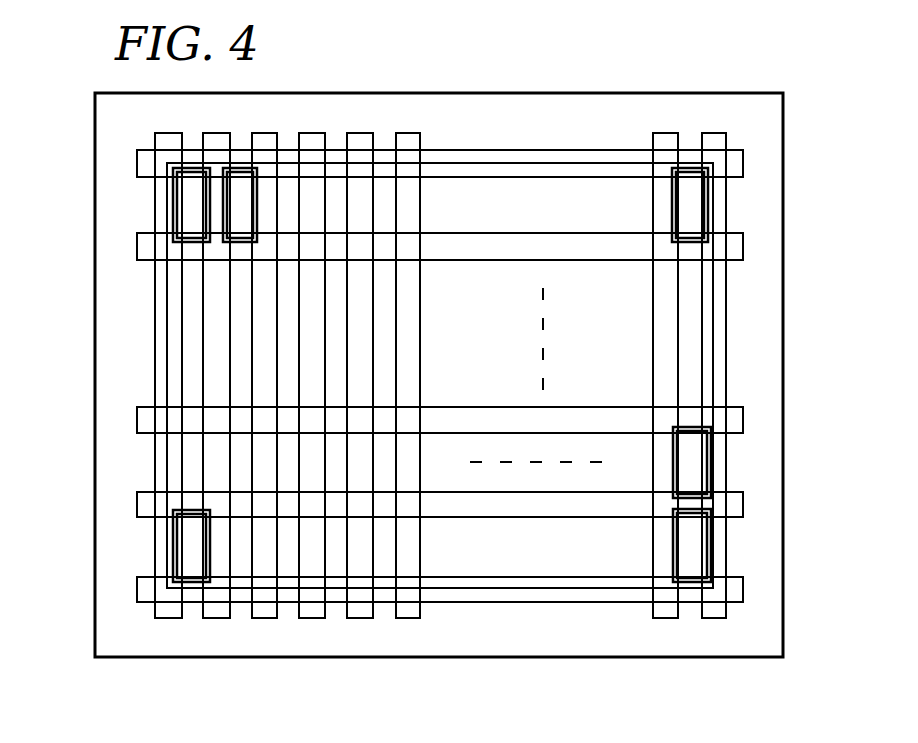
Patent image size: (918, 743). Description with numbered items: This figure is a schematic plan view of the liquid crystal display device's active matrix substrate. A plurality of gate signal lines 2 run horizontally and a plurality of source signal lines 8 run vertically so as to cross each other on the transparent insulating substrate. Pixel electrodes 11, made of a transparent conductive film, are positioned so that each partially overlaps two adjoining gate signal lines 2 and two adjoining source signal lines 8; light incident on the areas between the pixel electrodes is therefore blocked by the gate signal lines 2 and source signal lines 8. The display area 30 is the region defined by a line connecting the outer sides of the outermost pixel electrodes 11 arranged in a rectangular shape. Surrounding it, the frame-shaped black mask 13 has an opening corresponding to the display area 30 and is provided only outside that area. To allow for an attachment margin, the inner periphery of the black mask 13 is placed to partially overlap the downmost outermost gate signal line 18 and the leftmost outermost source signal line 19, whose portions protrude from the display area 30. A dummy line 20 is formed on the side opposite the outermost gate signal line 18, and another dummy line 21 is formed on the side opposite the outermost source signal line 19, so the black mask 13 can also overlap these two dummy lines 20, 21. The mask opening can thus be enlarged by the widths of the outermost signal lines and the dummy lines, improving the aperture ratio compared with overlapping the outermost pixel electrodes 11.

The gate signal lines 2 is at (143, 505).
The source signal lines 8 is at (220, 612).
The pixel electrode 11 is at (173, 218).
The black mask 13 is at (767, 304).
The outermost gate signal line 18 is at (148, 590).
The outermost source signal line 19 is at (172, 612).
The dummy line 20 is at (142, 168).
The dummy line 21 is at (717, 612).
The display area 30 is at (628, 359).